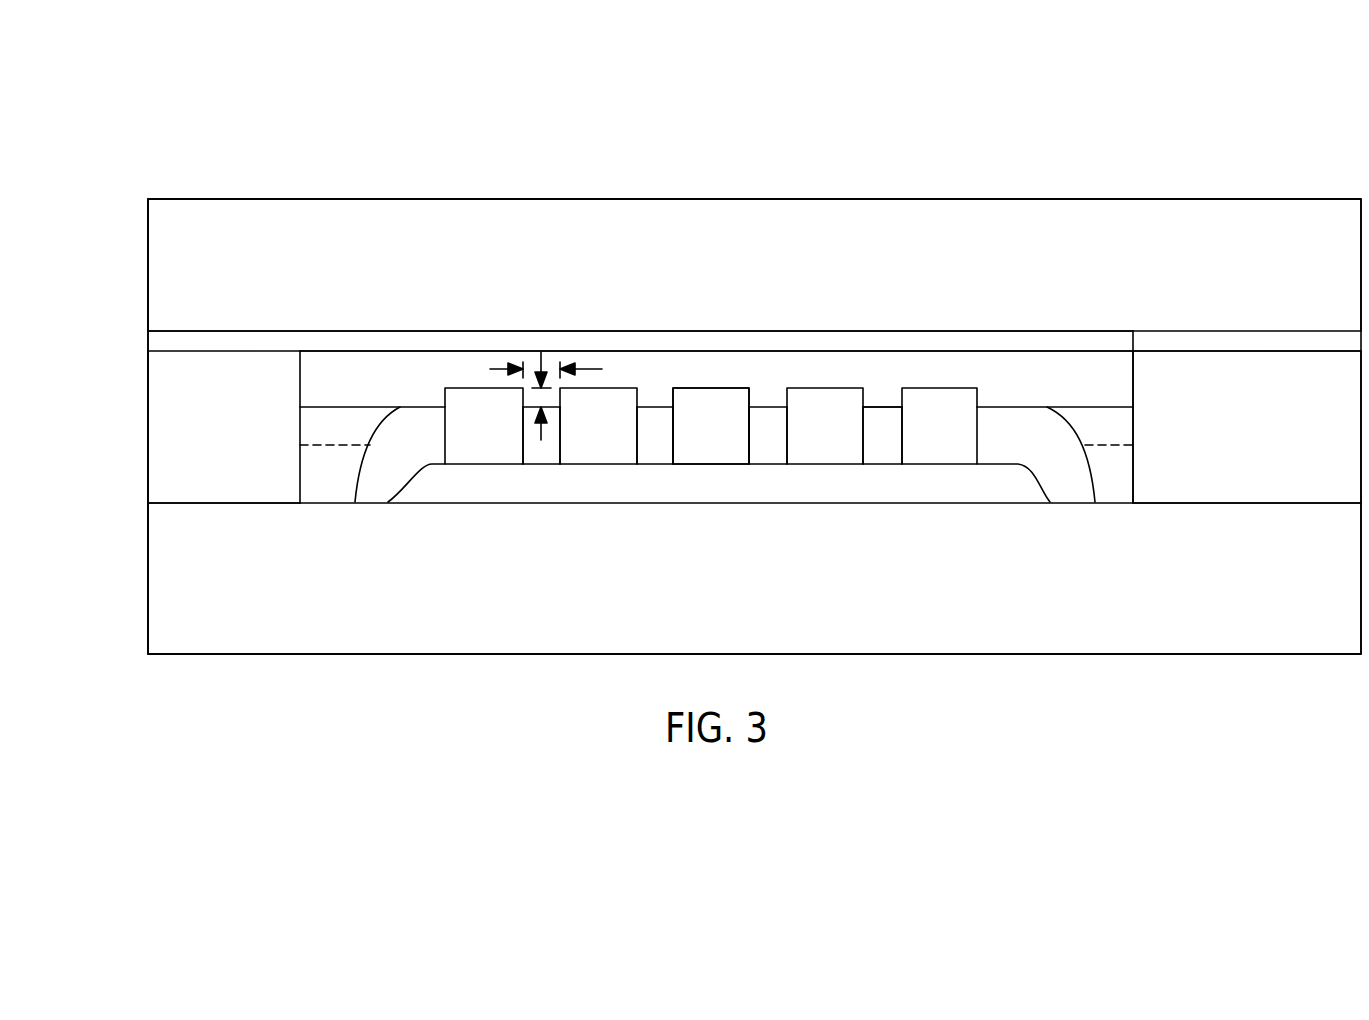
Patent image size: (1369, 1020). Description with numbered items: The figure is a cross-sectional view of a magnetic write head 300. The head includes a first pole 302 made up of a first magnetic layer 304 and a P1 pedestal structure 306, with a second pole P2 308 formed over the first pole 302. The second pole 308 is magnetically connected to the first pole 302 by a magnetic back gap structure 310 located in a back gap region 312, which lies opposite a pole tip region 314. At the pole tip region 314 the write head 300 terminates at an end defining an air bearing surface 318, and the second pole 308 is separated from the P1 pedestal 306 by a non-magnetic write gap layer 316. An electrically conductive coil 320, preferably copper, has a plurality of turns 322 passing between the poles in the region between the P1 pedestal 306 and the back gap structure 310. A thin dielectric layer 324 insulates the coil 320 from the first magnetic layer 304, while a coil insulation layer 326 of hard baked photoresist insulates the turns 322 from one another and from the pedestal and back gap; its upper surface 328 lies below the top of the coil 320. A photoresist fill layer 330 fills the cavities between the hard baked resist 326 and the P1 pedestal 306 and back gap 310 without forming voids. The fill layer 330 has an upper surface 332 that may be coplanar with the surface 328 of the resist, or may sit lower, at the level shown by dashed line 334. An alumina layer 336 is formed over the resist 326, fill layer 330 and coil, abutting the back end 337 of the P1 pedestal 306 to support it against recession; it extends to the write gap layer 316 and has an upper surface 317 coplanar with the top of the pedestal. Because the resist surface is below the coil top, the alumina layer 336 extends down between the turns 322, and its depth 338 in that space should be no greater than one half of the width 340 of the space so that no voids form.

The magnetic write head 300 is at (830, 180).
The first pole 302 is at (1025, 654).
The first magnetic layer 304 is at (758, 583).
The P1 pedestal structure 306 is at (165, 427).
The second pole P2 308 is at (770, 236).
The magnetic back gap structure 310 is at (1248, 400).
The back gap region 312 is at (1245, 199).
The pole tip region 314 is at (178, 199).
The non-magnetic write gap layer 316 is at (163, 343).
The upper surface of alumina layer 317 is at (453, 351).
The air bearing surface 318 is at (148, 442).
The electrically conductive coil 320 is at (736, 388).
The turns 322 is at (514, 425).
The thin dielectric layer 324 is at (853, 492).
The coil insulation layer 326 is at (383, 443).
The upper surface of insulation layer 328 is at (878, 407).
The photoresist fill layer 330 is at (315, 475).
The upper surface of fill layer 332 is at (333, 407).
The dashed line 334 is at (337, 445).
The alumina layer 336 is at (955, 370).
The back end of P1 pedestal 337 is at (302, 380).
The thickness or depth 338 is at (546, 358).
The width 340 is at (602, 369).